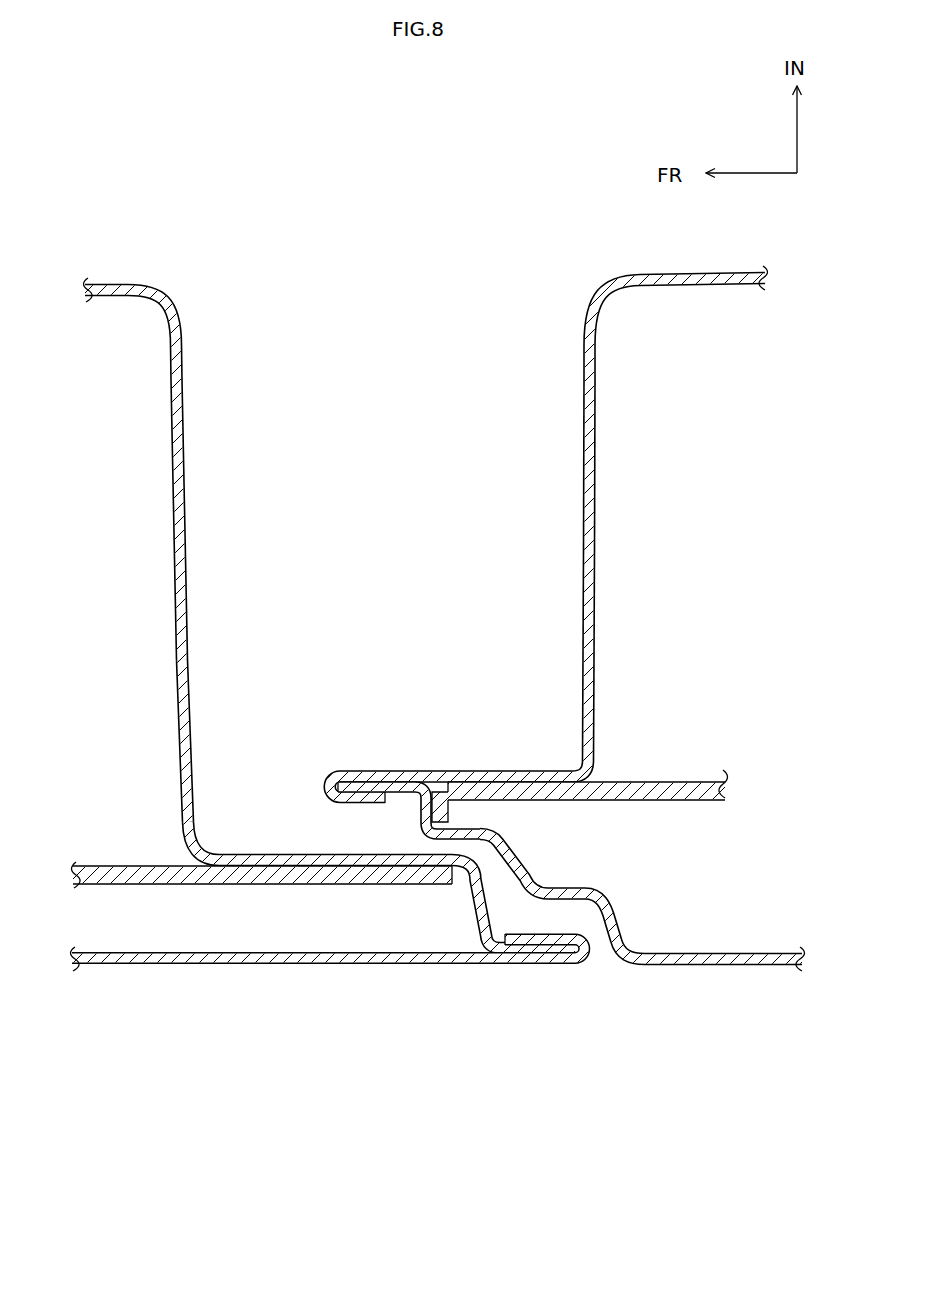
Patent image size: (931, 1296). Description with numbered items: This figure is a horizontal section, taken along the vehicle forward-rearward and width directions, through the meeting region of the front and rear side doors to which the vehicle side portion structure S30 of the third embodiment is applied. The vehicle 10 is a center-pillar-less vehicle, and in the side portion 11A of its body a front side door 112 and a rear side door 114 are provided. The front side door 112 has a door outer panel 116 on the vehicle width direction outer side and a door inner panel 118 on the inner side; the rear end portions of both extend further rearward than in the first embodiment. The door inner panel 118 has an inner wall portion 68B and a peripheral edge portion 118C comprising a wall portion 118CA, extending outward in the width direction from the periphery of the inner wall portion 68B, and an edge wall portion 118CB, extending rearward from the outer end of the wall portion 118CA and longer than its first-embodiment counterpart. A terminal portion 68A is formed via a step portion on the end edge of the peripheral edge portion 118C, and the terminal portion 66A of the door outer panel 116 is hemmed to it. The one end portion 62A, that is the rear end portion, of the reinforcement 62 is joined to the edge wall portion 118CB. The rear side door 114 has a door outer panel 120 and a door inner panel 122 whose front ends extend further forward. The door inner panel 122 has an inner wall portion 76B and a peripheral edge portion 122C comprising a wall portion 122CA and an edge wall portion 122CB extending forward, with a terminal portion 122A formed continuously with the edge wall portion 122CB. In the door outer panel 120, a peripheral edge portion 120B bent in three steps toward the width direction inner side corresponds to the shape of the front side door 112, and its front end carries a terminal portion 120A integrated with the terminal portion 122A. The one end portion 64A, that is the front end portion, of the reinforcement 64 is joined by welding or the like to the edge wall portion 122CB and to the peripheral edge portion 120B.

The vehicle 10 is at (586, 1082).
The side portion 11A is at (628, 1042).
The reinforcement 62 is at (262, 907).
The one end portion 62A is at (368, 895).
The reinforcement 64 is at (580, 825).
The one end portion 64A is at (463, 800).
The terminal portion 66A is at (557, 965).
The terminal portion 68A is at (523, 965).
The inner wall portion 68B is at (120, 284).
The inner wall portion 76B is at (695, 272).
The front side door 112 is at (333, 1004).
The rear side door 114 is at (719, 1003).
The door outer panel 116 is at (201, 975).
The door inner panel 118 is at (330, 633).
The peripheral edge portion 118C is at (191, 709).
The wall portion 118CA is at (187, 628).
The edge wall portion 118CB is at (290, 855).
The door outer panel 120 is at (571, 889).
The terminal portion 120A is at (381, 782).
The peripheral edge portion 120B is at (531, 873).
The door inner panel 122 is at (540, 506).
The terminal portion 122A is at (352, 771).
The peripheral edge portion 122C is at (583, 566).
The wall portion 122CA is at (583, 523).
The edge wall portion 122CB is at (503, 771).
The vehicle side portion structure S30 is at (483, 1010).